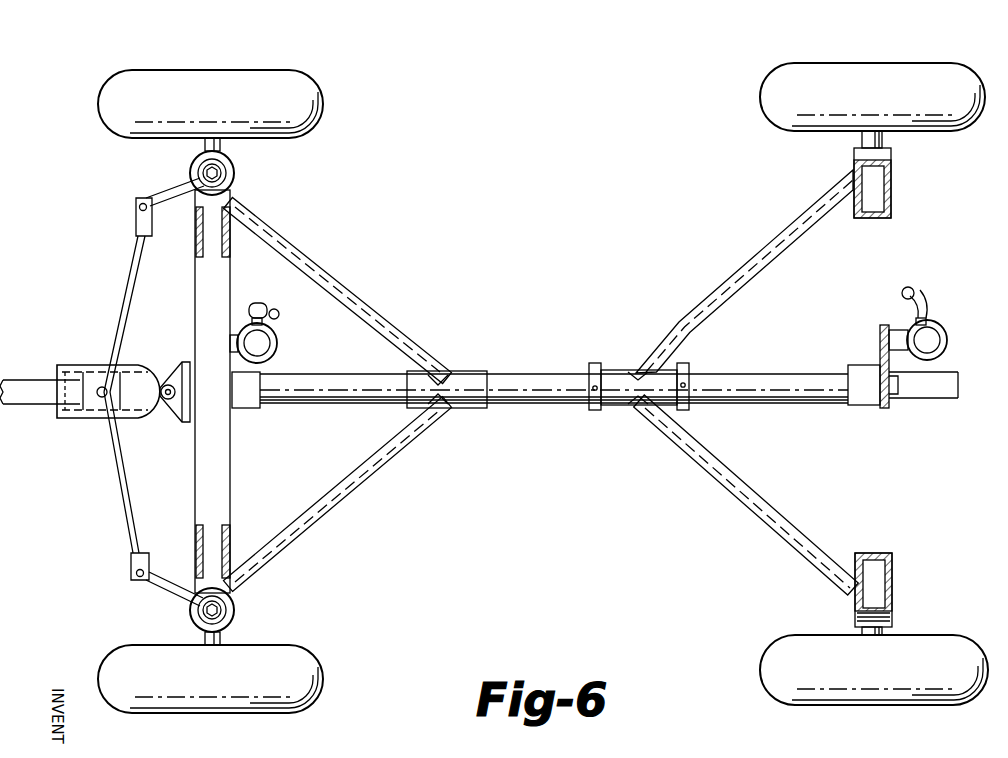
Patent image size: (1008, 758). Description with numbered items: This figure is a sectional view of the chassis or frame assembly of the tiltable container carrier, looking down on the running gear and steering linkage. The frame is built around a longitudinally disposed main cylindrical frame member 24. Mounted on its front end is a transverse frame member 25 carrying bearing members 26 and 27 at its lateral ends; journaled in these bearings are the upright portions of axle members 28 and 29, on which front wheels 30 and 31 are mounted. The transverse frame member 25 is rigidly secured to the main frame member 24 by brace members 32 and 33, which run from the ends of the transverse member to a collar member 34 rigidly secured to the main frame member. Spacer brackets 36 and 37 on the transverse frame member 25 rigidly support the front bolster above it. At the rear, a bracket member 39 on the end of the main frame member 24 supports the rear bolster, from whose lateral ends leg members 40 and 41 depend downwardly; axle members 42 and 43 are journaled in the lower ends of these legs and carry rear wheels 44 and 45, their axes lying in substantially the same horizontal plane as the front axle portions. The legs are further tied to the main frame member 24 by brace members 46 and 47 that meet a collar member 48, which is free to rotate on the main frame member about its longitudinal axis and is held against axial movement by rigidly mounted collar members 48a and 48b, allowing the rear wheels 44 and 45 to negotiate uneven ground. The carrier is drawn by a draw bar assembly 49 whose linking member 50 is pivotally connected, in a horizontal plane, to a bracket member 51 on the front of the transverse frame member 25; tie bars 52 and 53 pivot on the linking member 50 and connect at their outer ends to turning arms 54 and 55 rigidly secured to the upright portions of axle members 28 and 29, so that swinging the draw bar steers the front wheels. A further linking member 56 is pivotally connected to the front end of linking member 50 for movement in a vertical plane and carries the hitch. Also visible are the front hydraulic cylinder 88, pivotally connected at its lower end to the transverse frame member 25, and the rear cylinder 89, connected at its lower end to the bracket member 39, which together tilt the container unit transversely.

The main cylindrical frame member 24 is at (559, 412).
The transverse frame member 25 is at (230, 454).
The bearing member 26 is at (236, 174).
The bearing member 27 is at (236, 610).
The axle member 28 is at (205, 150).
The axle member 29 is at (204, 636).
The front wheel 30 is at (323, 101).
The front wheel 31 is at (323, 690).
The brace member 32 is at (350, 288).
The brace member 33 is at (373, 482).
The collar member 34 is at (474, 408).
The spacer bracket 36 is at (230, 248).
The spacer bracket 37 is at (230, 536).
The bracket member 39 is at (878, 344).
The leg member 40 is at (897, 584).
The leg member 41 is at (891, 189).
The axle member 42 is at (860, 630).
The axle member 43 is at (862, 142).
The rear wheel 44 is at (940, 707).
The rear wheel 45 is at (928, 62).
The brace member 46 is at (736, 490).
The brace member 47 is at (744, 266).
The collar member 48 is at (616, 406).
The collar member 48a is at (586, 364).
The collar member 48b is at (698, 406).
The draw bar assembly 49 is at (79, 430).
The linking member 50 is at (145, 420).
The bracket member 51 is at (184, 418).
The tie bar 52 is at (118, 278).
The tie bar 53 is at (118, 494).
The turning arm 54 is at (174, 196).
The turning arm 55 is at (167, 565).
The linking member 56 is at (29, 404).
The front hydraulic cylinder 88 is at (278, 352).
The rear cylinder 89 is at (947, 344).